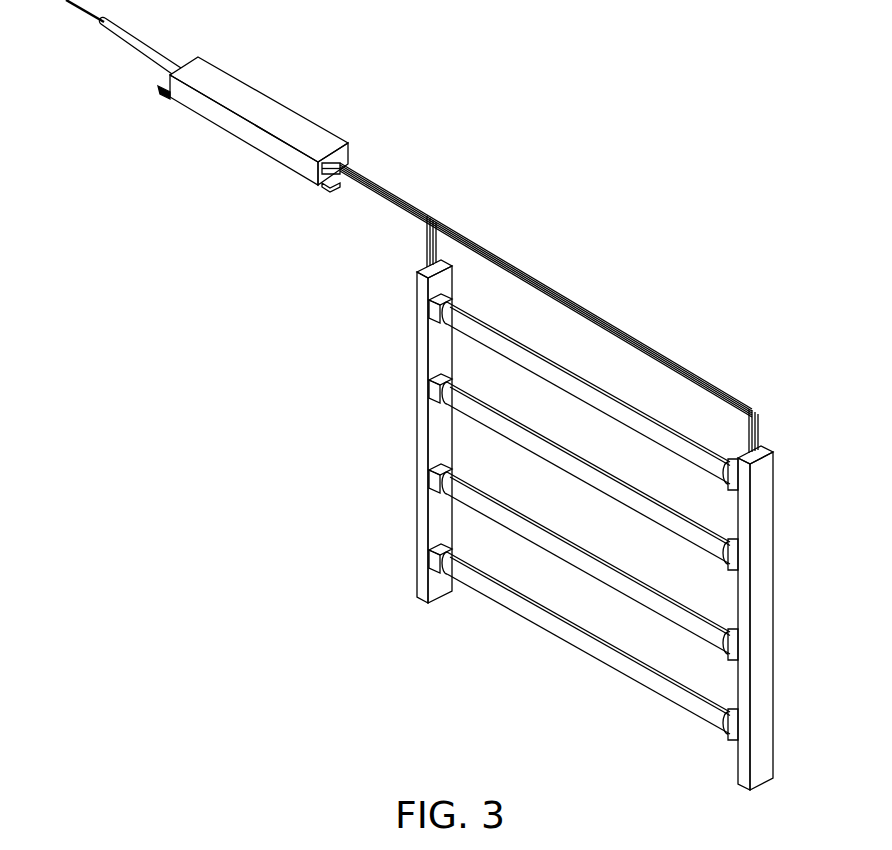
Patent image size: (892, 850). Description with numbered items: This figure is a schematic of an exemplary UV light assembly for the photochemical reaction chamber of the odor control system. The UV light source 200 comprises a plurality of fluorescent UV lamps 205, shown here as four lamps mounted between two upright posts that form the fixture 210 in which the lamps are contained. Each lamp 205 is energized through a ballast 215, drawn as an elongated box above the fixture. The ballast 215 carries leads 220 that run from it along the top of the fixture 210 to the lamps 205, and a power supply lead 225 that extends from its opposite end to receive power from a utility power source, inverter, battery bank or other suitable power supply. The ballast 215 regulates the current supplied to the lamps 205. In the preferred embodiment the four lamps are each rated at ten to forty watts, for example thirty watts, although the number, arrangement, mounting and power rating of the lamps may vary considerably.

The UV light source 200 is at (390, 552).
The fluorescent UV lamps 205 is at (563, 632).
The fixture 210 is at (423, 433).
The ballast 215 is at (260, 108).
The leads 220 is at (498, 260).
The power supply lead 225 is at (122, 35).